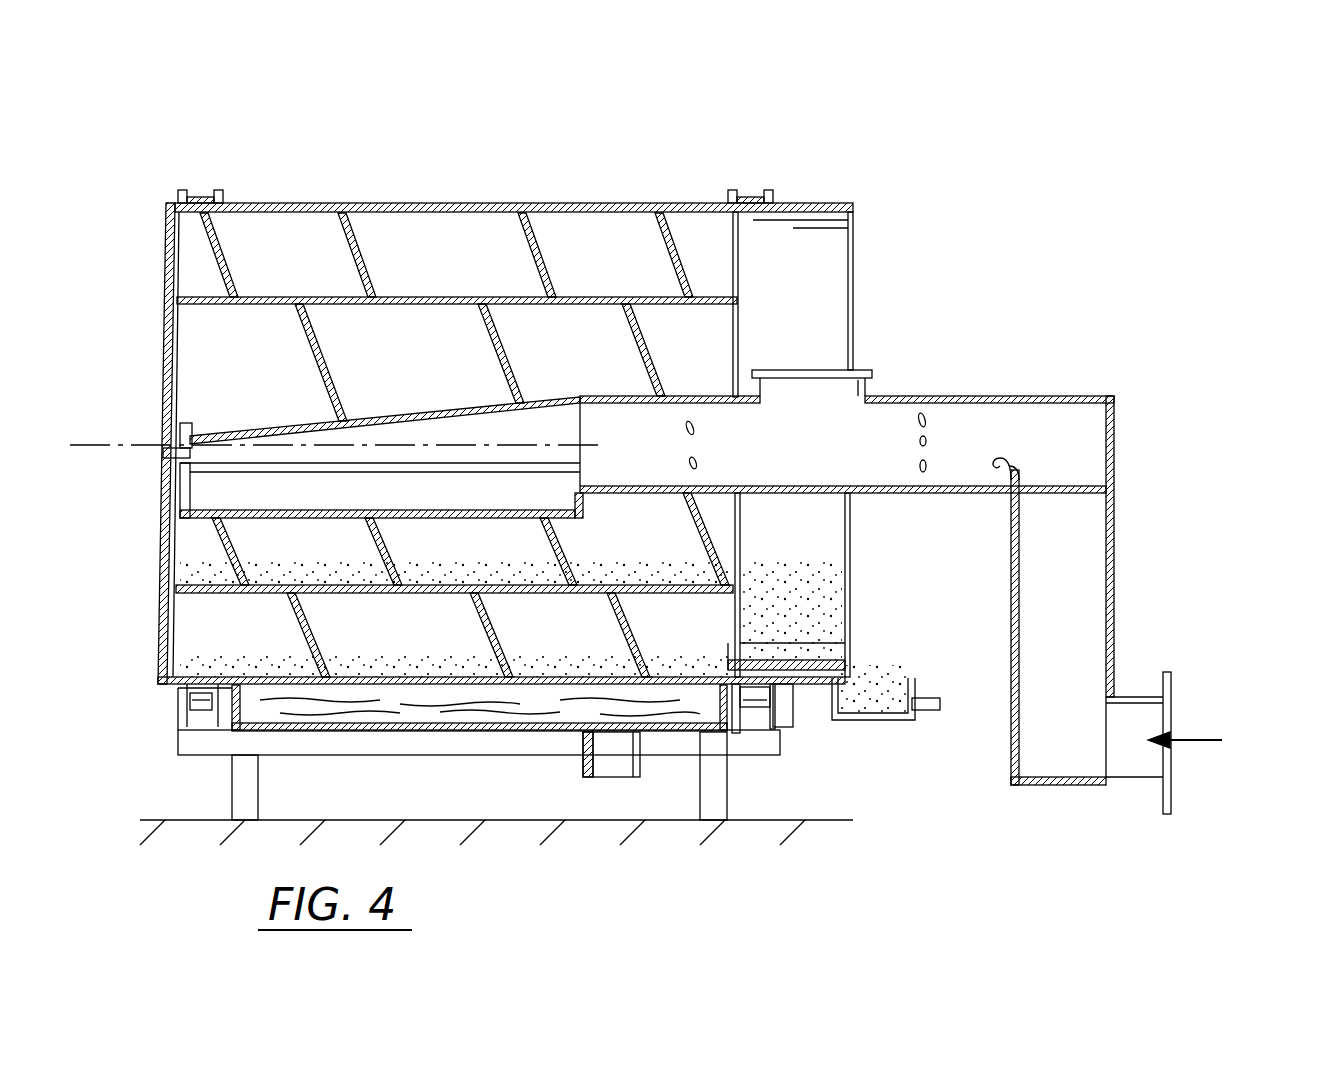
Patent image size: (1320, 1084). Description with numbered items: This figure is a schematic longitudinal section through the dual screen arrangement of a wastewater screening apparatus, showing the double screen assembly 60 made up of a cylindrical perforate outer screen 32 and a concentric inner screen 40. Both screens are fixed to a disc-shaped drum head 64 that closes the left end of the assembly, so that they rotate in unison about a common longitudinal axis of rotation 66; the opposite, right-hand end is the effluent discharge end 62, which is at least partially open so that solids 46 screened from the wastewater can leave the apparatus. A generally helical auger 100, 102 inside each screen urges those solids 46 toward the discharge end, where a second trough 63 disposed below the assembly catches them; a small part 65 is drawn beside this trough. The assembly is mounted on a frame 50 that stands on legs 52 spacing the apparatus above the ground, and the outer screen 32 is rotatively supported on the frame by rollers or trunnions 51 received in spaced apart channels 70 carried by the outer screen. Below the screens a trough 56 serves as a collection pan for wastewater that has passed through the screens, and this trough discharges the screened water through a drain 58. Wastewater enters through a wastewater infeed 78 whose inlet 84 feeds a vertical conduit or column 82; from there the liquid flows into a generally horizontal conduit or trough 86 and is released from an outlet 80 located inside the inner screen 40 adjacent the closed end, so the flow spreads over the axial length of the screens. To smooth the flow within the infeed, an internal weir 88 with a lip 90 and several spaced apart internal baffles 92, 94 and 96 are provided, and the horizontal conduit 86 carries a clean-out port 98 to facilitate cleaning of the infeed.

The outer screen 32 is at (825, 202).
The inner screen 40 is at (708, 296).
The solids 46 is at (600, 660).
The frame 50 is at (178, 742).
The rollers 51 is at (178, 704).
The legs 52 is at (237, 778).
The trough 56 is at (382, 716).
The drain 58 is at (583, 765).
The double screen assembly 60 is at (704, 163).
The effluent discharge end 62 is at (818, 666).
The second trough 63 is at (870, 722).
The drum head 64 is at (192, 357).
The stub 65 is at (926, 698).
The longitudinal axis of rotation 66 is at (118, 402).
The channels 70 is at (205, 192).
The wastewater infeed 78 is at (1172, 688).
The outlet 80 is at (318, 505).
The vertical conduit 82 is at (1116, 558).
The inlet 84 is at (1160, 722).
The horizontal conduit 86 is at (1022, 395).
The internal weir 88 is at (1024, 474).
The lip 90 is at (999, 458).
The internal baffle 92 is at (917, 419).
The internal baffle 94 is at (914, 463).
The internal baffle 96 is at (706, 467).
The clean-out port 98 is at (862, 370).
The auger 100 is at (546, 262).
The auger 102 is at (632, 338).